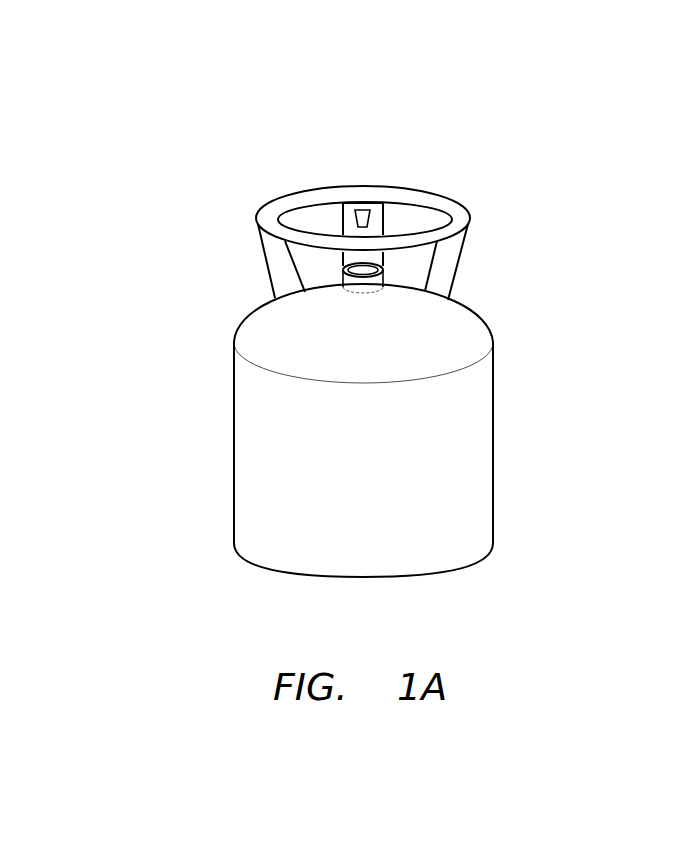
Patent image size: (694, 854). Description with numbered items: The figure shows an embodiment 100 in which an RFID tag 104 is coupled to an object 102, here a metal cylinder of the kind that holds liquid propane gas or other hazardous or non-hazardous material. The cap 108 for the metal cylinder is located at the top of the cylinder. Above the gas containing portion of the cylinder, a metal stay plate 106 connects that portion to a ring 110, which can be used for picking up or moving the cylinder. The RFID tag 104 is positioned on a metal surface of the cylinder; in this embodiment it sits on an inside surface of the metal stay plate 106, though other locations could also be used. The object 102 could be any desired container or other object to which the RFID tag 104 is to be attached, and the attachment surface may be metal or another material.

The embodiment 100 is at (582, 192).
The object 102 is at (493, 463).
The RFID tag 104 is at (372, 218).
The metal stay plate 106 is at (338, 212).
The cap 108 is at (360, 280).
The ring 110 is at (310, 244).